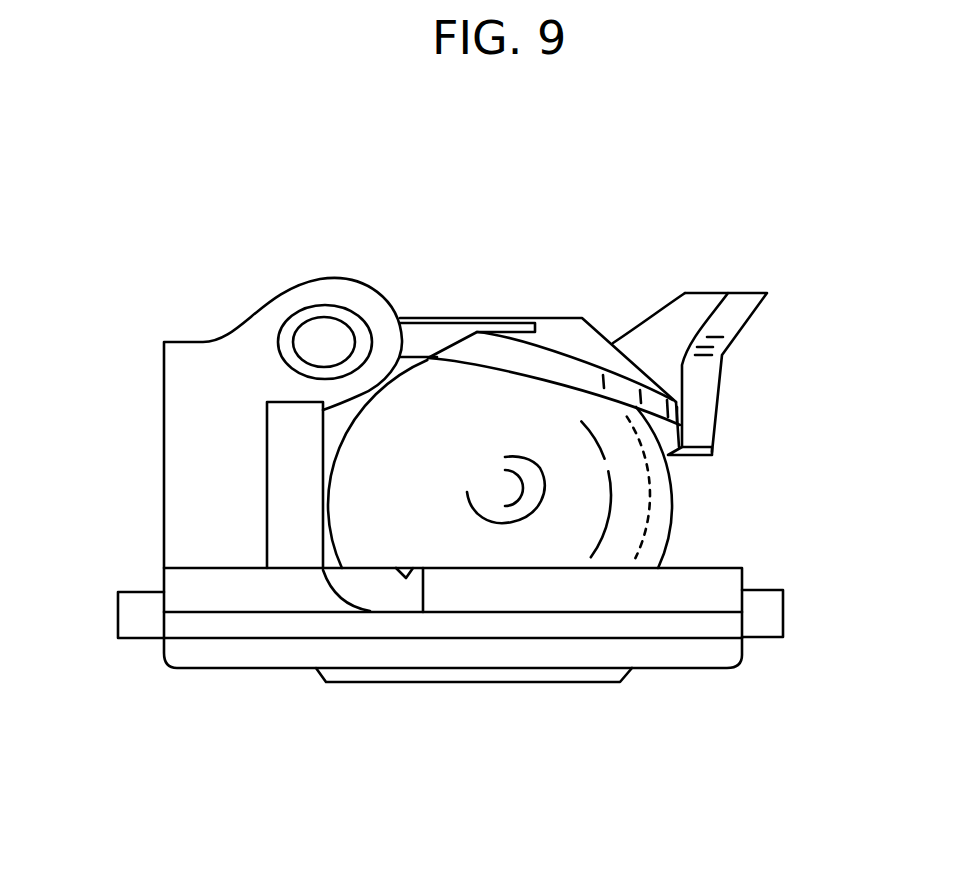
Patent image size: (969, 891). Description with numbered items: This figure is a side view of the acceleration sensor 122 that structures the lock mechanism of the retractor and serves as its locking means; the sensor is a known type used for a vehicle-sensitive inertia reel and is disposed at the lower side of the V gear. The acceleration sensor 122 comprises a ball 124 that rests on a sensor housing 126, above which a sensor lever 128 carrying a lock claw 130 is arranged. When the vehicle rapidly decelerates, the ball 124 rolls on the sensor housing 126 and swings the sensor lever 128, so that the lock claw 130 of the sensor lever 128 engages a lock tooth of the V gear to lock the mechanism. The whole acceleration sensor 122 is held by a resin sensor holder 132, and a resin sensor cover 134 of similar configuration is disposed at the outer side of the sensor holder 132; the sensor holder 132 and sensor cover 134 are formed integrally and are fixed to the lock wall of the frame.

The acceleration sensor 122 is at (505, 262).
The ball 124 is at (640, 527).
The sensor housing 126 is at (695, 657).
The sensor lever 128 is at (568, 318).
The lock claw 130 is at (733, 307).
The sensor holder 132 is at (128, 616).
The sensor cover 134 is at (488, 674).